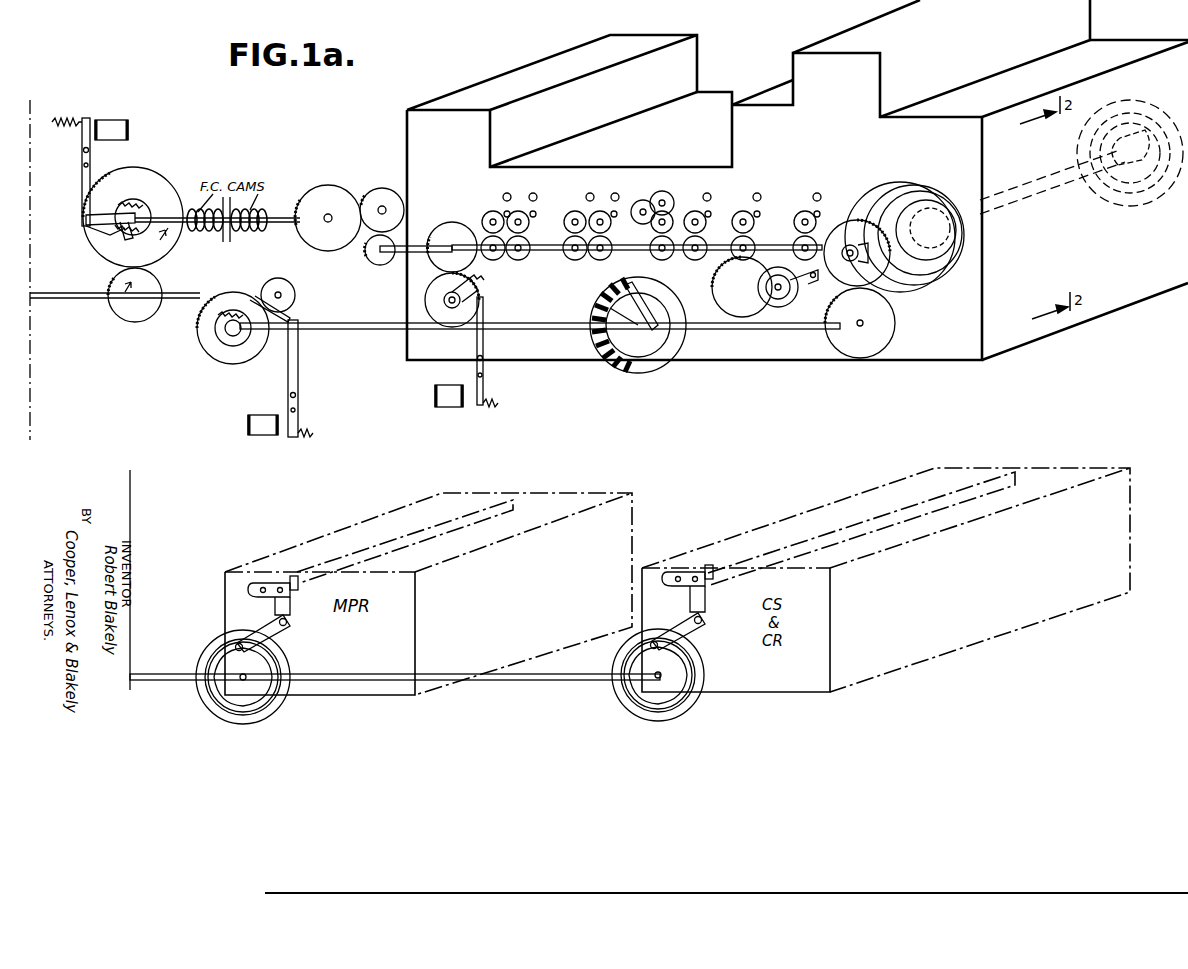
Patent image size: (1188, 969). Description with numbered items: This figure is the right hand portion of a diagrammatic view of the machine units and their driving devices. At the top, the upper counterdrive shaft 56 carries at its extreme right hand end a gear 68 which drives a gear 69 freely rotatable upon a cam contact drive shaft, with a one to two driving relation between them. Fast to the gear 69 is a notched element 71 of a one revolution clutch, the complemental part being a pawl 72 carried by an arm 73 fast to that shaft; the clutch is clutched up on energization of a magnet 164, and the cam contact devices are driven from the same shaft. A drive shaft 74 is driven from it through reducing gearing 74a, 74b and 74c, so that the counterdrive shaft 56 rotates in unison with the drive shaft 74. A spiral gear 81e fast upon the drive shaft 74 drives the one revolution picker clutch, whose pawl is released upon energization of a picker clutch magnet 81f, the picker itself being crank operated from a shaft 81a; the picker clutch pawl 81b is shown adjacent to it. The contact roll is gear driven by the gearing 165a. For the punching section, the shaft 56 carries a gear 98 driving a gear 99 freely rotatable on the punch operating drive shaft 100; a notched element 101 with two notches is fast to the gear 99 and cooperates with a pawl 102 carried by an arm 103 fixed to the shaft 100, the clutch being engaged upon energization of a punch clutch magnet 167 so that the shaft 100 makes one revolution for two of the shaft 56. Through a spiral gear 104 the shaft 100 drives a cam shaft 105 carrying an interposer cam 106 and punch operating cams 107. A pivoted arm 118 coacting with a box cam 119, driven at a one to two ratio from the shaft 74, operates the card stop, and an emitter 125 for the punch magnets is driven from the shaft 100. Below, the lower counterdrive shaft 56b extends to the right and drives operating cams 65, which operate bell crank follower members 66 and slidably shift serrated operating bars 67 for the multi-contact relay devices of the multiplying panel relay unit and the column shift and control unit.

The magnet 164 is at (116, 128).
The notched element 71 is at (140, 200).
The arm 73 is at (110, 214).
The pawl 72 is at (108, 232).
The gear 69 is at (158, 252).
The upper counterdrive shaft 56 is at (72, 299).
The gear 68 is at (140, 316).
The reducing gear 74a is at (320, 234).
The reducing gear 74b is at (378, 192).
The reducing gear 74c is at (370, 258).
The drive shaft 74 is at (400, 266).
The spiral gear 81e is at (452, 230).
The pawl 81b is at (478, 292).
The shaft 81a is at (443, 302).
The picker clutch magnet 81f is at (452, 398).
The gear 98 is at (296, 295).
The pawl 102 is at (296, 318).
The notched element 101 is at (215, 330).
The gear 99 is at (228, 350).
The arm 103 is at (255, 340).
The punch operating drive shaft 100 is at (350, 330).
The punch clutch magnet 167 is at (265, 425).
The gearing 165a is at (662, 191).
The interposer cam 106 is at (880, 195).
The cam shaft 105 is at (1068, 180).
The punch operating cams 107 is at (990, 242).
The spiral gear 104 is at (886, 323).
The pivoted arm 118 is at (805, 300).
The box cam 119 is at (775, 305).
The emitter 125 is at (660, 352).
The serrated operating bars 67 is at (256, 586).
The bell crank follower members 66 is at (272, 635).
The operating cams 65 is at (266, 711).
The lower counterdrive shaft 56b is at (365, 683).